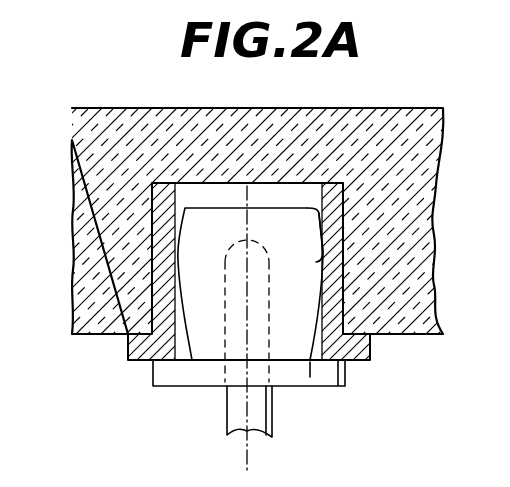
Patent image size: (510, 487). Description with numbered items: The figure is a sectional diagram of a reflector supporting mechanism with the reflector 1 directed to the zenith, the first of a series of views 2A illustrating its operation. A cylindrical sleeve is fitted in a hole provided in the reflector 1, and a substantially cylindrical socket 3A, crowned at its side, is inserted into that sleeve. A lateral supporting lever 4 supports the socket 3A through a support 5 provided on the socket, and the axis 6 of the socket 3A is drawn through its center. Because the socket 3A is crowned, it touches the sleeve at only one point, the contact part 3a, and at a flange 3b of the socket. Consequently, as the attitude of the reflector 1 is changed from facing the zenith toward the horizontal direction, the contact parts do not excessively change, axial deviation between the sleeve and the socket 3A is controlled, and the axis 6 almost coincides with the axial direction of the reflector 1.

The reflector 1 is at (410, 108).
The bushing 2A is at (335, 193).
The socket 3A is at (192, 222).
The contact part 3a is at (316, 262).
The flange 3b is at (349, 373).
The lateral supporting lever 4 is at (274, 403).
The support 5 is at (238, 262).
The axis 6 is at (253, 453).